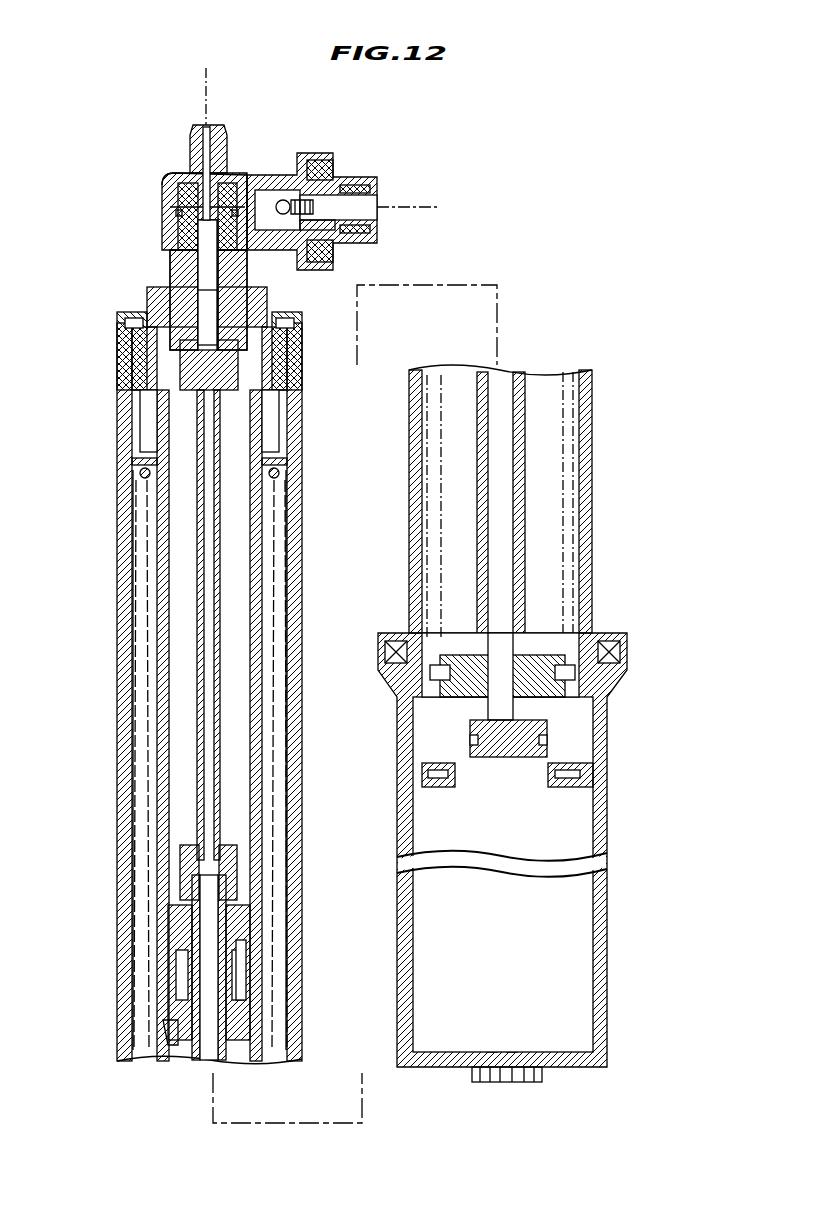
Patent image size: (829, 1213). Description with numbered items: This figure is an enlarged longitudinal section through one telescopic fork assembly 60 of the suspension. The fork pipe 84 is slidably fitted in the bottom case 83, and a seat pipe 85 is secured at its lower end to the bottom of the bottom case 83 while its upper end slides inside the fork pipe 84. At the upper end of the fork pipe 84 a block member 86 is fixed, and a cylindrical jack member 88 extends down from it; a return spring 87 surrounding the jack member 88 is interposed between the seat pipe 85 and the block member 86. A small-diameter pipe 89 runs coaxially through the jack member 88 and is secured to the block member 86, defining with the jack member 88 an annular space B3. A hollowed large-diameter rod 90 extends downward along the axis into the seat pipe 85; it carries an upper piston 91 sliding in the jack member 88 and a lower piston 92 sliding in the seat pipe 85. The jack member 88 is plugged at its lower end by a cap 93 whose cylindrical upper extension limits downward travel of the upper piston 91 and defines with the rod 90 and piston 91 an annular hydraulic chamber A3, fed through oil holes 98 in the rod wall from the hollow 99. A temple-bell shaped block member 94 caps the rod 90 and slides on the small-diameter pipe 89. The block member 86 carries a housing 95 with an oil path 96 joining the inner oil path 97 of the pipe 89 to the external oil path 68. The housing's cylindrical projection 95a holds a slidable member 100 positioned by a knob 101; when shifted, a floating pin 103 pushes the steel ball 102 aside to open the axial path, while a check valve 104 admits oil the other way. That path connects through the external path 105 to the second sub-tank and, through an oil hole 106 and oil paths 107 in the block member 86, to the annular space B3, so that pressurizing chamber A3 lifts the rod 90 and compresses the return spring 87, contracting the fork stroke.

The telescopic fork assembly 60 is at (600, 440).
The external oil path 68 is at (202, 83).
The bottom case 83 is at (593, 785).
The fork pipe 84 is at (117, 560).
The seat pipe 85 is at (548, 938).
The block member 86 is at (150, 312).
The return spring 87 is at (145, 938).
The cylindrical jack member 88 is at (157, 668).
The small-diameter pipe 89 is at (197, 612).
The hollowed large-diameter rod 90 is at (488, 478).
The upper piston 91 is at (186, 945).
The lower piston 92 is at (530, 735).
The cap 93 is at (166, 1030).
The temple-bell shaped block member 94 is at (182, 862).
The housing 95 is at (222, 135).
The cylindrical projection 95a is at (238, 180).
The oil path 96 is at (190, 150).
The inner oil path 97 is at (207, 515).
The oil hole 98 is at (236, 958).
The hollow 99 is at (212, 888).
The slidable member 100 is at (300, 165).
The knob 101 is at (337, 170).
The steel ball 102 is at (283, 198).
The floating pin 103 is at (280, 232).
The check valve 104 is at (335, 243).
The external path 105 is at (440, 207).
The oil hole 106 is at (176, 207).
The oil path 107 is at (235, 300).
The annular hydraulic chamber A3 is at (244, 985).
The annular space B3 is at (175, 732).